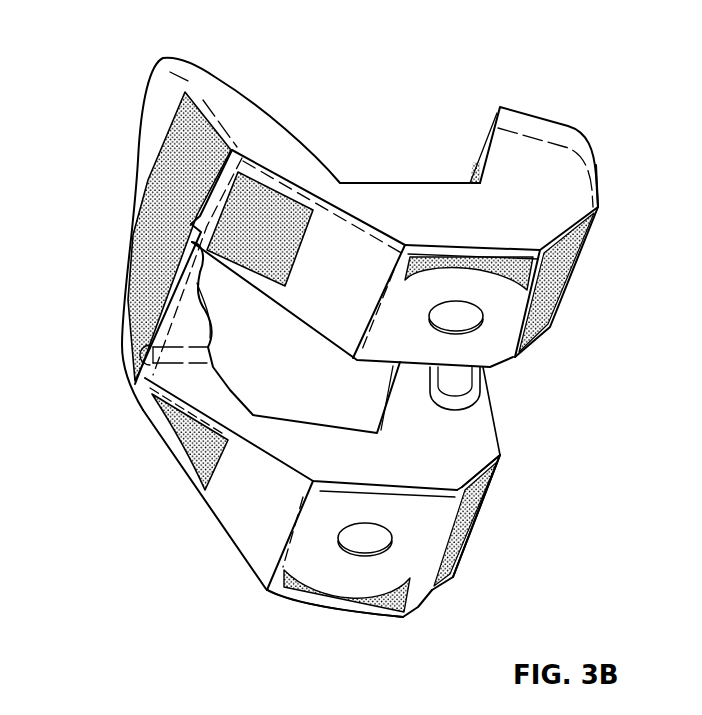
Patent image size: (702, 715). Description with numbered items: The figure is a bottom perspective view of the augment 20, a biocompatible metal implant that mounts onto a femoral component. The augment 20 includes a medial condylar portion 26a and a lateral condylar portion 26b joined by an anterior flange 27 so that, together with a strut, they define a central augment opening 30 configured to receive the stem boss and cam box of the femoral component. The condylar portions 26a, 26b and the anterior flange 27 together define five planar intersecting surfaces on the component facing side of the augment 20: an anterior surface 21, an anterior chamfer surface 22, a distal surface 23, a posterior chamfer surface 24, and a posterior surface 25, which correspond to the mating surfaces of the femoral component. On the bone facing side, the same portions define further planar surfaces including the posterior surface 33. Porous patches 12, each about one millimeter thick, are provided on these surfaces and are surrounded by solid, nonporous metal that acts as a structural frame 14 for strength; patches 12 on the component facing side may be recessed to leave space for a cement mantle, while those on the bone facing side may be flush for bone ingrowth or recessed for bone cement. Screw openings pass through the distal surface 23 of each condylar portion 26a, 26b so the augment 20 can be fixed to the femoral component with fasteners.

The augment 20 is at (105, 41).
The anterior flange 27 is at (125, 91).
The anterior surface 21 is at (165, 203).
The anterior chamfer surface 22 is at (322, 250).
The porous patches 12 is at (177, 423).
The posterior surface 33 is at (481, 140).
The posterior surface 25 is at (597, 163).
The lateral condylar portion 26b is at (613, 226).
The medial condylar portion 26a is at (519, 500).
The posterior chamfer surface 24 is at (557, 283).
The distal surface 23 is at (477, 340).
The augment opening 30 is at (307, 386).
The structural frame 14 is at (262, 555).